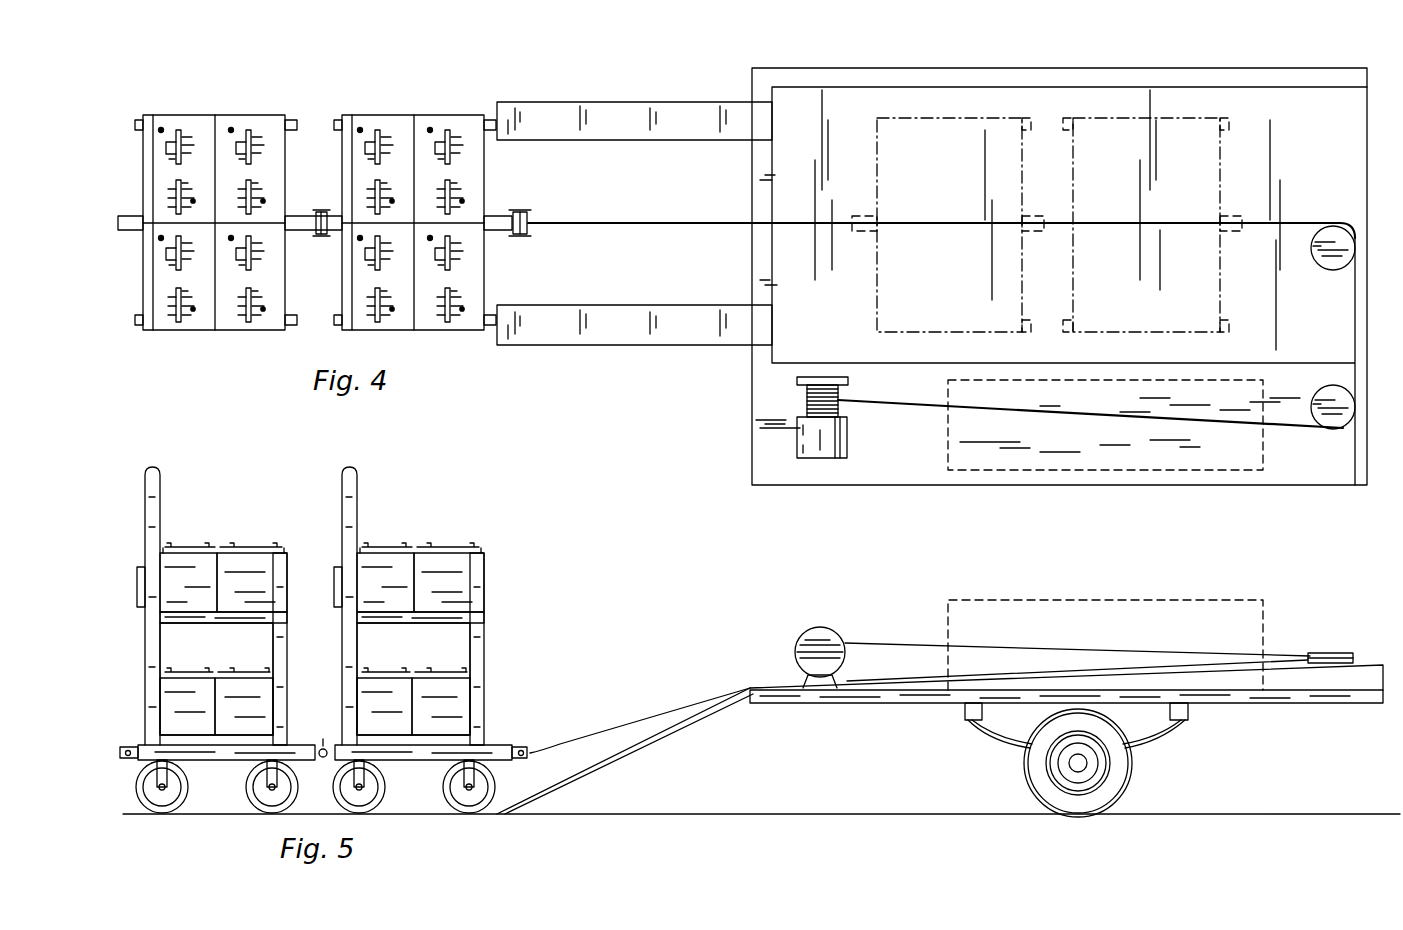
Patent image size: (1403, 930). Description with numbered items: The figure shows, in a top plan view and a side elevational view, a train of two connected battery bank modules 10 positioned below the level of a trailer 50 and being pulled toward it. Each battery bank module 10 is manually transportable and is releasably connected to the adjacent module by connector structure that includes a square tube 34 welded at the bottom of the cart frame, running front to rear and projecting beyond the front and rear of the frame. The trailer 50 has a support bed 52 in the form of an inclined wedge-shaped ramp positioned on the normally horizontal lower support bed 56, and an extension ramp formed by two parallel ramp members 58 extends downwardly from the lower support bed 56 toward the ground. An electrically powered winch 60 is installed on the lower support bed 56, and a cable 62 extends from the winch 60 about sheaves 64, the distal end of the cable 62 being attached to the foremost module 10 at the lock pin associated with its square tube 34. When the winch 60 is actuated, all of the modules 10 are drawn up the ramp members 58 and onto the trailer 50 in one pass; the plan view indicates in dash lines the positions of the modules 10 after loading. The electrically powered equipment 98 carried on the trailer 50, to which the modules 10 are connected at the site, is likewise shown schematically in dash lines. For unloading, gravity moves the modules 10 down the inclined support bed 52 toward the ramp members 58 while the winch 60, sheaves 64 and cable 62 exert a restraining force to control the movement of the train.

In FIG. 4, the battery bank module 10 is at (207, 108).
In FIG. 5, the battery bank module 10 is at (180, 478).
In FIG. 4, the square tube 34 is at (503, 232).
In FIG. 4, the trailer 50 is at (1336, 487).
In FIG. 5, the trailer 50 is at (1318, 704).
In FIG. 5, the support bed 52 is at (1375, 665).
In FIG. 5, the lower support bed 56 is at (1140, 683).
In FIG. 4, the ramp members 58 is at (625, 116).
In FIG. 5, the ramp members 58 is at (687, 720).
In FIG. 4, the winch 60 is at (808, 400).
In FIG. 5, the winch 60 is at (801, 641).
In FIG. 4, the cable 62 is at (906, 404).
In FIG. 5, the cable 62 is at (888, 642).
In FIG. 4, the sheaves 64 is at (1328, 258).
In FIG. 5, the sheaves 64 is at (1318, 652).
In FIG. 4, the electrically powered equipment 98 is at (1192, 472).
In FIG. 5, the electrically powered equipment 98 is at (1036, 600).